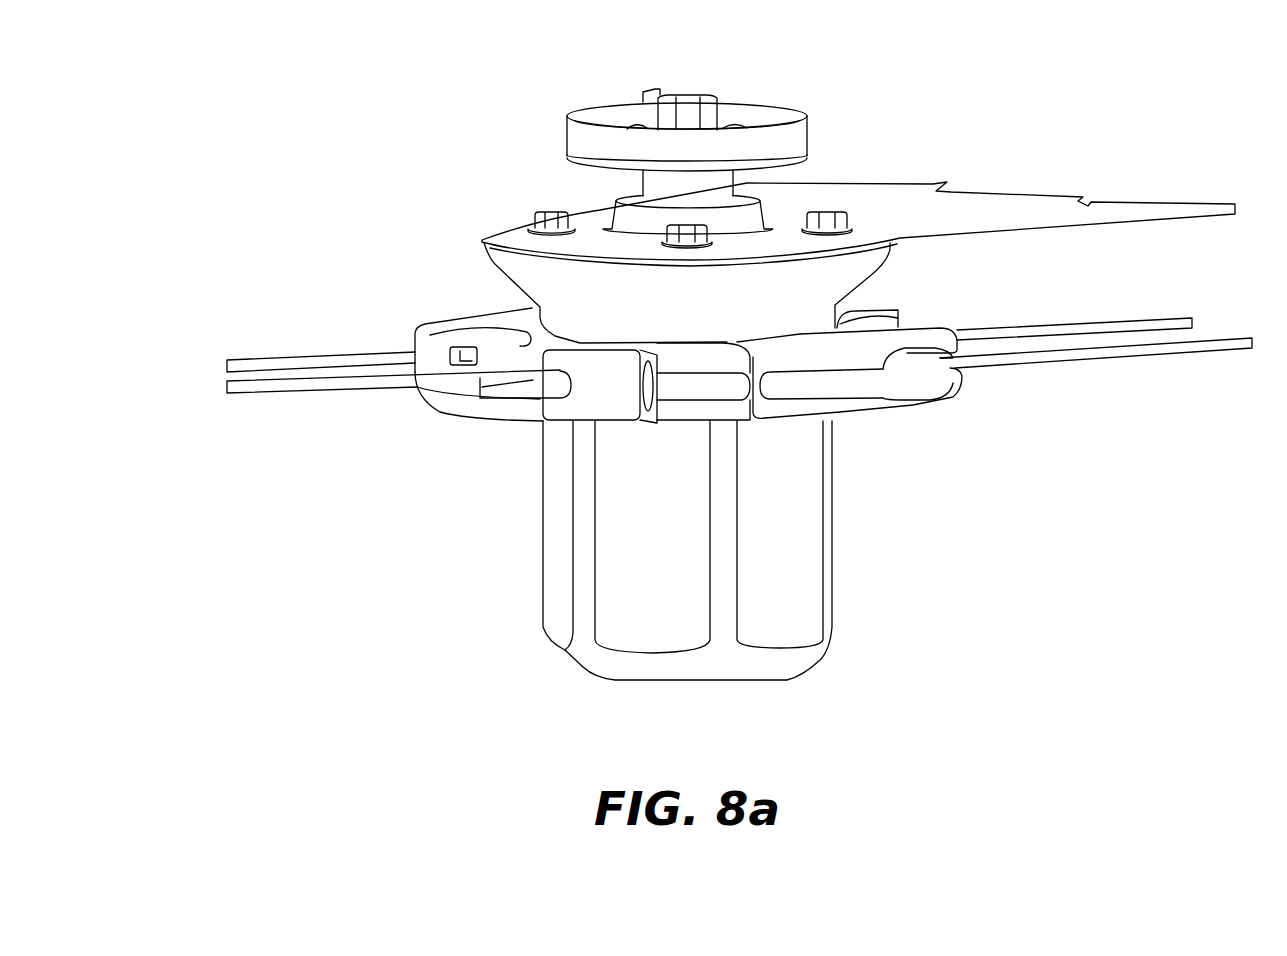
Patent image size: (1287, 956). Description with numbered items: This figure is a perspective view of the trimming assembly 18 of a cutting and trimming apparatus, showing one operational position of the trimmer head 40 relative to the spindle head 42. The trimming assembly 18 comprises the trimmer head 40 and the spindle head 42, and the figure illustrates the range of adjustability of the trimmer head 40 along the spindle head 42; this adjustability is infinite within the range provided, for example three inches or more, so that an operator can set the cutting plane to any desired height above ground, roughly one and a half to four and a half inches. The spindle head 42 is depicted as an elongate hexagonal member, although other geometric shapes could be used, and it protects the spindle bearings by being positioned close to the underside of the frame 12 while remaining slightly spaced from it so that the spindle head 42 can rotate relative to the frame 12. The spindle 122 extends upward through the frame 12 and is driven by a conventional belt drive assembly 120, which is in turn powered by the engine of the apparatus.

The belt drive assembly 120 is at (800, 138).
The spindle 122 is at (660, 187).
The frame 12 is at (922, 224).
The trimming assembly 18 is at (1018, 478).
The trimmer head 40 is at (437, 422).
The spindle head 42 is at (537, 563).